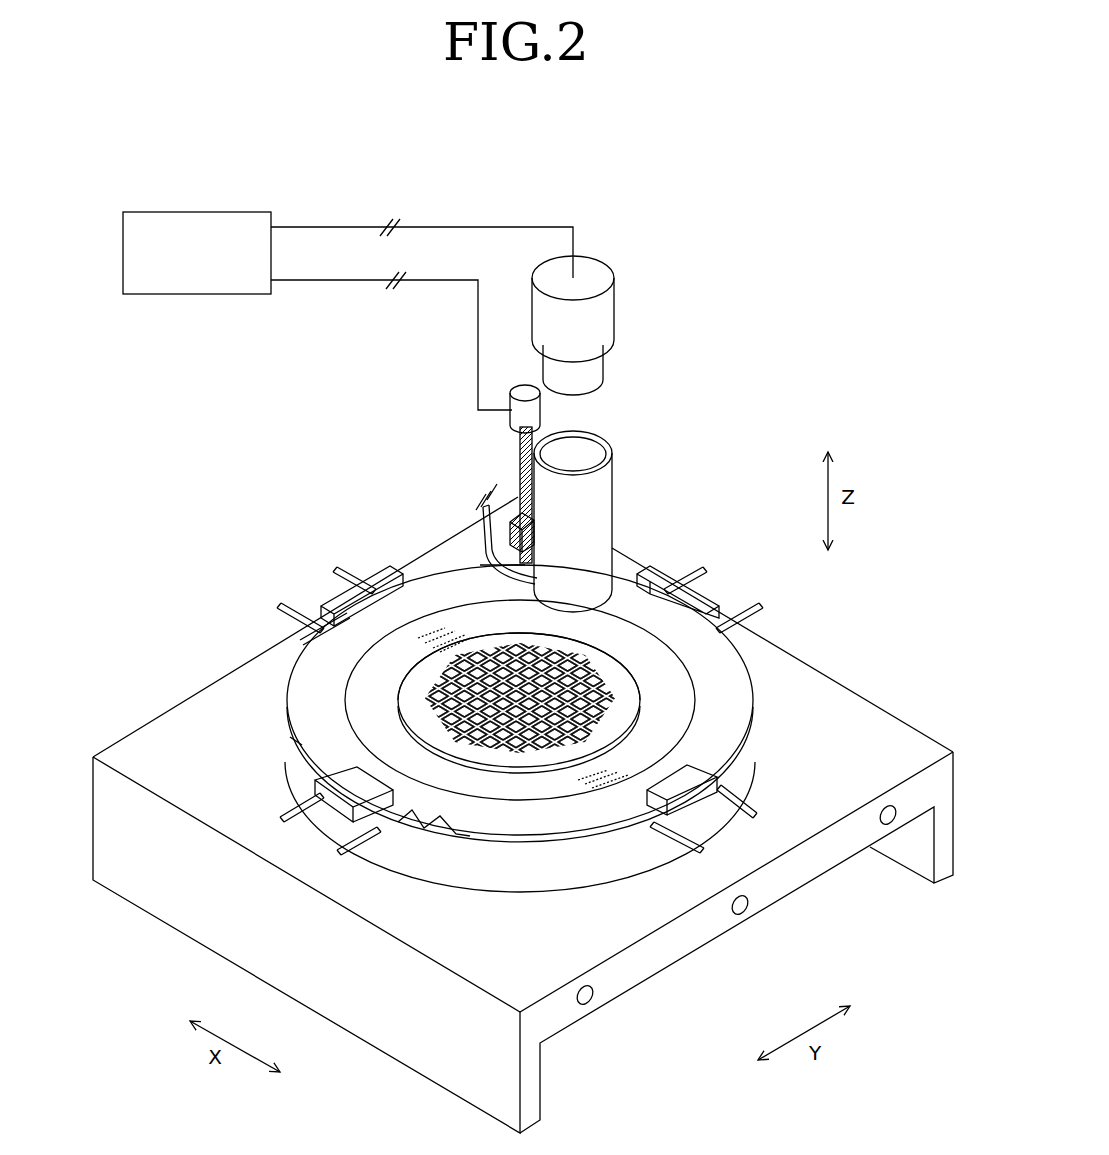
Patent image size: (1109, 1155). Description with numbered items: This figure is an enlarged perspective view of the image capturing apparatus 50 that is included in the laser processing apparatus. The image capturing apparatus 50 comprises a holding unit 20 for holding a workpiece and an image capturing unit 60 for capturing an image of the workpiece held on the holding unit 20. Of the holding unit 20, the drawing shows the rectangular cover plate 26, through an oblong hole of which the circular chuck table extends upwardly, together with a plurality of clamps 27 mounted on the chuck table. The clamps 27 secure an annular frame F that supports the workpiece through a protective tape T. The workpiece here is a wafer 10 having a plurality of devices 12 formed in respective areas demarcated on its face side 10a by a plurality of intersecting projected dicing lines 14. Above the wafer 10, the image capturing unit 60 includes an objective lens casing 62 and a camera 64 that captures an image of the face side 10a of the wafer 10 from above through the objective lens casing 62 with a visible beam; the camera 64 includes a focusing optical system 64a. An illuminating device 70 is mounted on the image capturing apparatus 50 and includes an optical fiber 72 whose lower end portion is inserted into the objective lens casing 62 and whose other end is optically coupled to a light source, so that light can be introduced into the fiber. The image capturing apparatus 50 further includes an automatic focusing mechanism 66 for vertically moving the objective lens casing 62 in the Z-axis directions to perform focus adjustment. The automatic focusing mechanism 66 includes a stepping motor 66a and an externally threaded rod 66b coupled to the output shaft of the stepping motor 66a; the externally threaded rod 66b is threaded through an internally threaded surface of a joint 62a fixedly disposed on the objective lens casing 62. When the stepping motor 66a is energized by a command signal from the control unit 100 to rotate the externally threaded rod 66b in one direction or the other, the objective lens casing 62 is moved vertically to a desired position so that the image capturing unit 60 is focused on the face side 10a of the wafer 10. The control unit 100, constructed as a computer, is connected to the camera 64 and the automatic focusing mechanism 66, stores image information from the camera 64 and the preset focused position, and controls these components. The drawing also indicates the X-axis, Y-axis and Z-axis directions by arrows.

The wafer 10 is at (645, 708).
The face side 10a is at (612, 672).
The devices 12 is at (510, 645).
The projected dicing lines 14 is at (462, 700).
The protective tape T is at (660, 737).
The annular frame F is at (725, 742).
The holding unit 20 is at (523, 815).
The cover plate 26 is at (158, 742).
The clamps 27 is at (340, 598).
The image capturing apparatus 50 is at (601, 434).
The image capturing unit 60 is at (543, 434).
The objective lens casing 62 is at (597, 515).
The joint 62a is at (536, 545).
The camera 64 is at (600, 318).
The focusing optical system 64a is at (593, 366).
The automatic focusing mechanism 66 is at (488, 454).
The stepping motor 66a is at (536, 393).
The externally threaded rod 66b is at (520, 468).
The illuminating device 70 is at (470, 538).
The optical fiber 72 is at (483, 560).
The control unit 100 is at (212, 212).